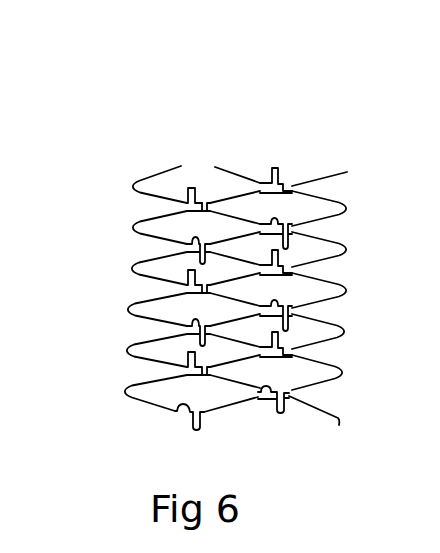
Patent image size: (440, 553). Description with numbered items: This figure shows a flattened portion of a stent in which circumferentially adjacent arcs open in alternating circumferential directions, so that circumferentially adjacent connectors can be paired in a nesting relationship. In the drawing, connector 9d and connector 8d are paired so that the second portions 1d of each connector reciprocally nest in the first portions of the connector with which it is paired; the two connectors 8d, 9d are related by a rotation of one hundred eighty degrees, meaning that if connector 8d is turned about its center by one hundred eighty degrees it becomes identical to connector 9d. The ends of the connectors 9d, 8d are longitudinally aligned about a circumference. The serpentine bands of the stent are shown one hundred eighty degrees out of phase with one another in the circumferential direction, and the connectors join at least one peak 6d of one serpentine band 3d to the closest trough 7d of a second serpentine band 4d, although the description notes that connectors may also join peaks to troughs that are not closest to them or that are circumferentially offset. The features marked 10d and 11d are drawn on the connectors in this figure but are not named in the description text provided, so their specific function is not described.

The second portion 1d is at (130, 50).
The serpentine band 3d is at (158, 423).
The second serpentine band 4d is at (233, 425).
The peak 6d is at (197, 384).
The trough 7d is at (200, 387).
The connector 8d is at (184, 298).
The connector 9d is at (189, 239).
The recess 10d is at (208, 197).
The tab 11d is at (199, 174).